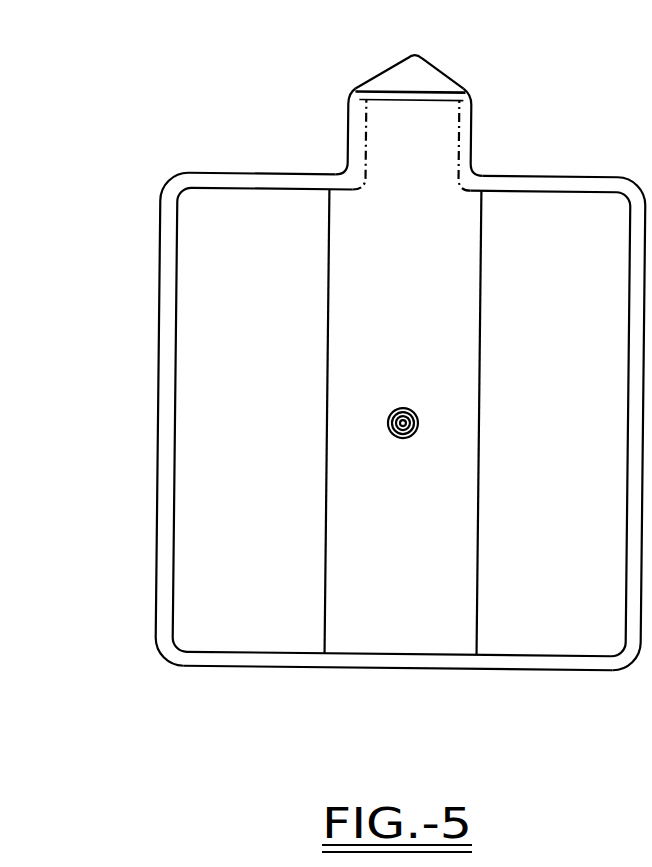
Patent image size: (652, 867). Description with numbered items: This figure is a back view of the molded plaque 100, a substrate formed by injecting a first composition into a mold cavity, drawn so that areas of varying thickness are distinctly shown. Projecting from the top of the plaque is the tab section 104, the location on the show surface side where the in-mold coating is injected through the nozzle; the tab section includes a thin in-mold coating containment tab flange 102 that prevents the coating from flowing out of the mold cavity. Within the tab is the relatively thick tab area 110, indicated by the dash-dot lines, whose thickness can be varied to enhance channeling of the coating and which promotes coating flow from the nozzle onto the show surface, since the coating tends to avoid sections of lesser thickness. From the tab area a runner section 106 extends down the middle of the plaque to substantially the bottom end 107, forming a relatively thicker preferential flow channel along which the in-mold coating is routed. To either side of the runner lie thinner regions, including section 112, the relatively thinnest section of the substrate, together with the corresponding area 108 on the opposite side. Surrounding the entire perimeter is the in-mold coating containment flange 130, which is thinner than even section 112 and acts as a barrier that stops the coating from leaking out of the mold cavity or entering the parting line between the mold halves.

The plaque 100 is at (345, 381).
The in-mold coating containment tab flange 102 is at (470, 115).
The tab section 104 is at (403, 72).
The runner section 106 is at (403, 622).
The bottom end 107 is at (444, 668).
The left compartment 108 is at (250, 620).
The tab area 110 is at (445, 152).
The section 112 is at (548, 627).
The in-mold coating containment flange 130 is at (166, 292).